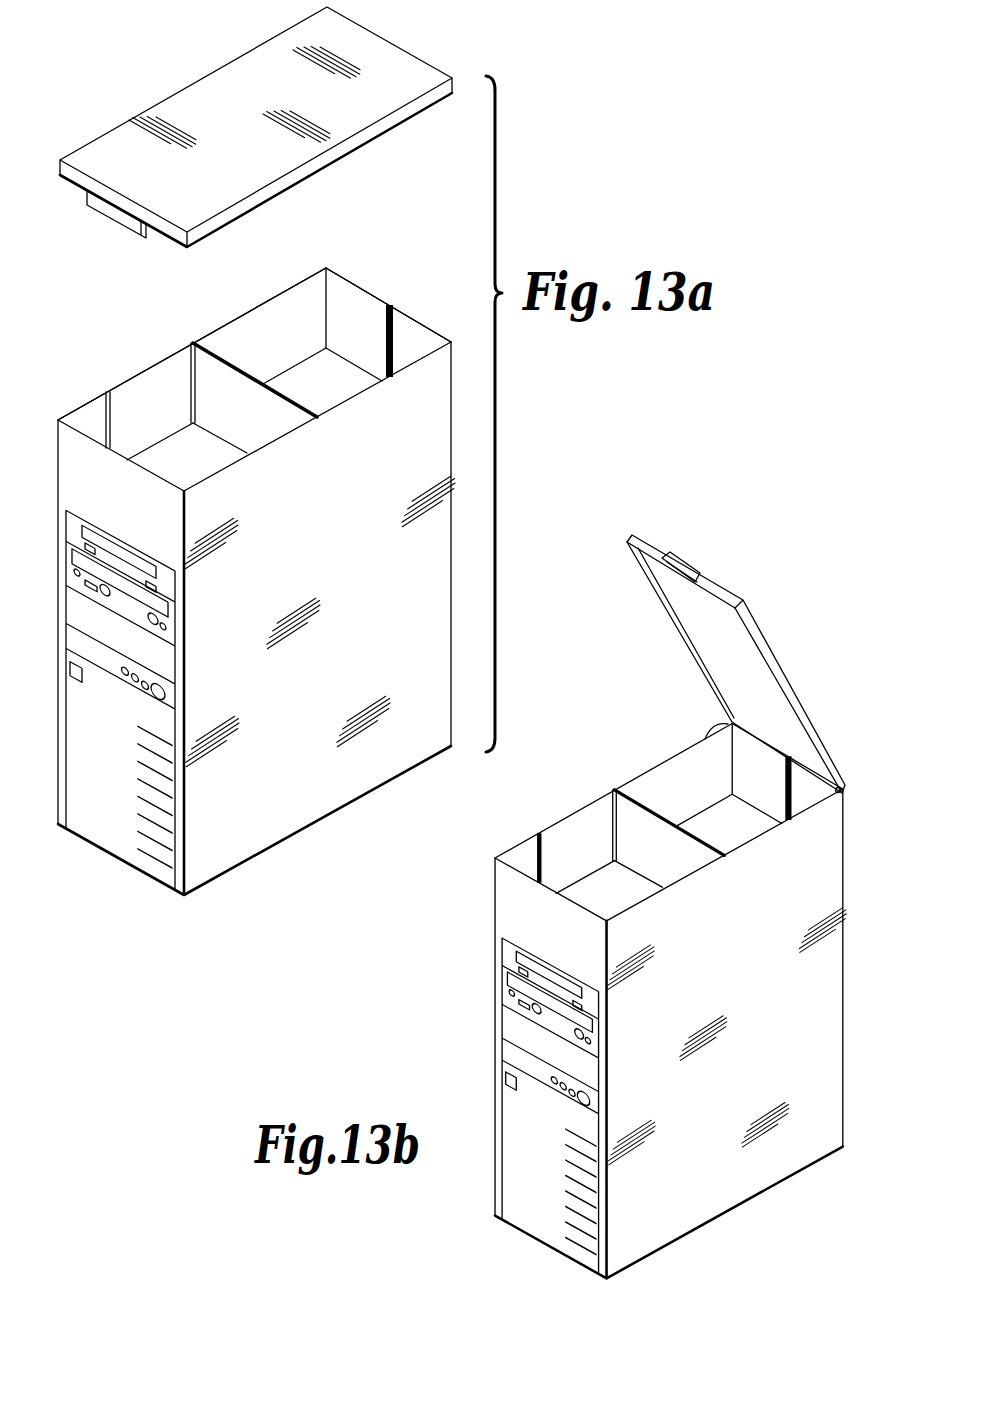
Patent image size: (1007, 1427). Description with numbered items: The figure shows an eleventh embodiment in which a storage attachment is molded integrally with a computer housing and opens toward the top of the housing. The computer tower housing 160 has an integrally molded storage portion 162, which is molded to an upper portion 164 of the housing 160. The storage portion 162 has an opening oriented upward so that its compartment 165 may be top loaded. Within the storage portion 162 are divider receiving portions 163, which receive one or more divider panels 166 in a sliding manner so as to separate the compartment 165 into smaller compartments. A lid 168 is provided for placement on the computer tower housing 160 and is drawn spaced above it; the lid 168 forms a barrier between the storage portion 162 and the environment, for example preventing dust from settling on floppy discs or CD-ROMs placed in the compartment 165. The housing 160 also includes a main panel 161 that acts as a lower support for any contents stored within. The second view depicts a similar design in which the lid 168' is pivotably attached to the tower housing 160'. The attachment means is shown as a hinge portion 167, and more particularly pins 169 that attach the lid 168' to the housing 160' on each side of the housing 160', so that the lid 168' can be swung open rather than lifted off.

In FIG. 13a, the computer tower housing 160 is at (250, 562).
In FIG. 13b, the tower housing 160' is at (673, 960).
In FIG. 13a, the main panel 161 is at (303, 377).
In FIG. 13a, the storage portion 162 is at (346, 280).
In FIG. 13a, the divider receiving portions 163 is at (390, 307).
In FIG. 13a, the upper portion 164 is at (67, 460).
In FIG. 13a, the compartment 165 is at (368, 318).
In FIG. 13a, the divider panels 166 is at (205, 367).
In FIG. 13b, the hinge portion 167 is at (707, 738).
In FIG. 13a, the lid 168 is at (289, 127).
In FIG. 13b, the lid 168' is at (736, 664).
In FIG. 13b, the pins 169 is at (840, 792).